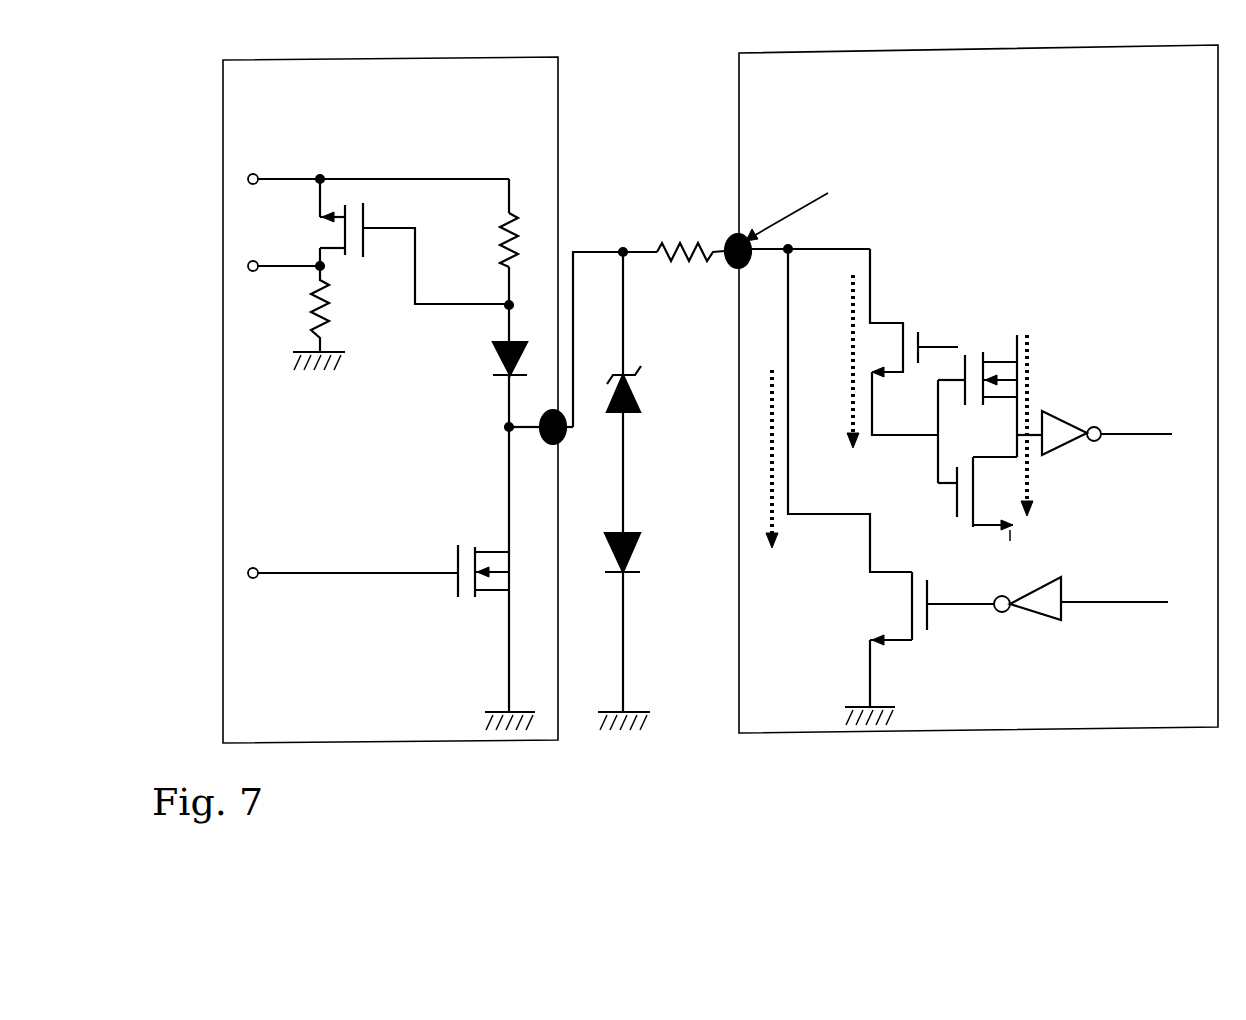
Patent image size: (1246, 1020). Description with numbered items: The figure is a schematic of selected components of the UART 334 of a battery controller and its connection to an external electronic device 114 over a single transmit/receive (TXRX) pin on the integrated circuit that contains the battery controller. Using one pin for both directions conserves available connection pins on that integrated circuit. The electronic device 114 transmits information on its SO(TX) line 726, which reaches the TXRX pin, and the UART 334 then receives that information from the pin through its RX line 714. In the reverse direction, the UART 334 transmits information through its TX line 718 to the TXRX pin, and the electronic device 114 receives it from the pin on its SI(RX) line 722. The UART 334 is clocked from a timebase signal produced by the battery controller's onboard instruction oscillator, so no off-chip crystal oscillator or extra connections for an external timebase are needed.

The electronic device 114 is at (428, 743).
The UART 334 is at (1035, 732).
The RX line 714 is at (1139, 430).
The TX line 718 is at (1128, 608).
The SI(RX) line 722 is at (283, 266).
The SO(TX) line 726 is at (360, 573).